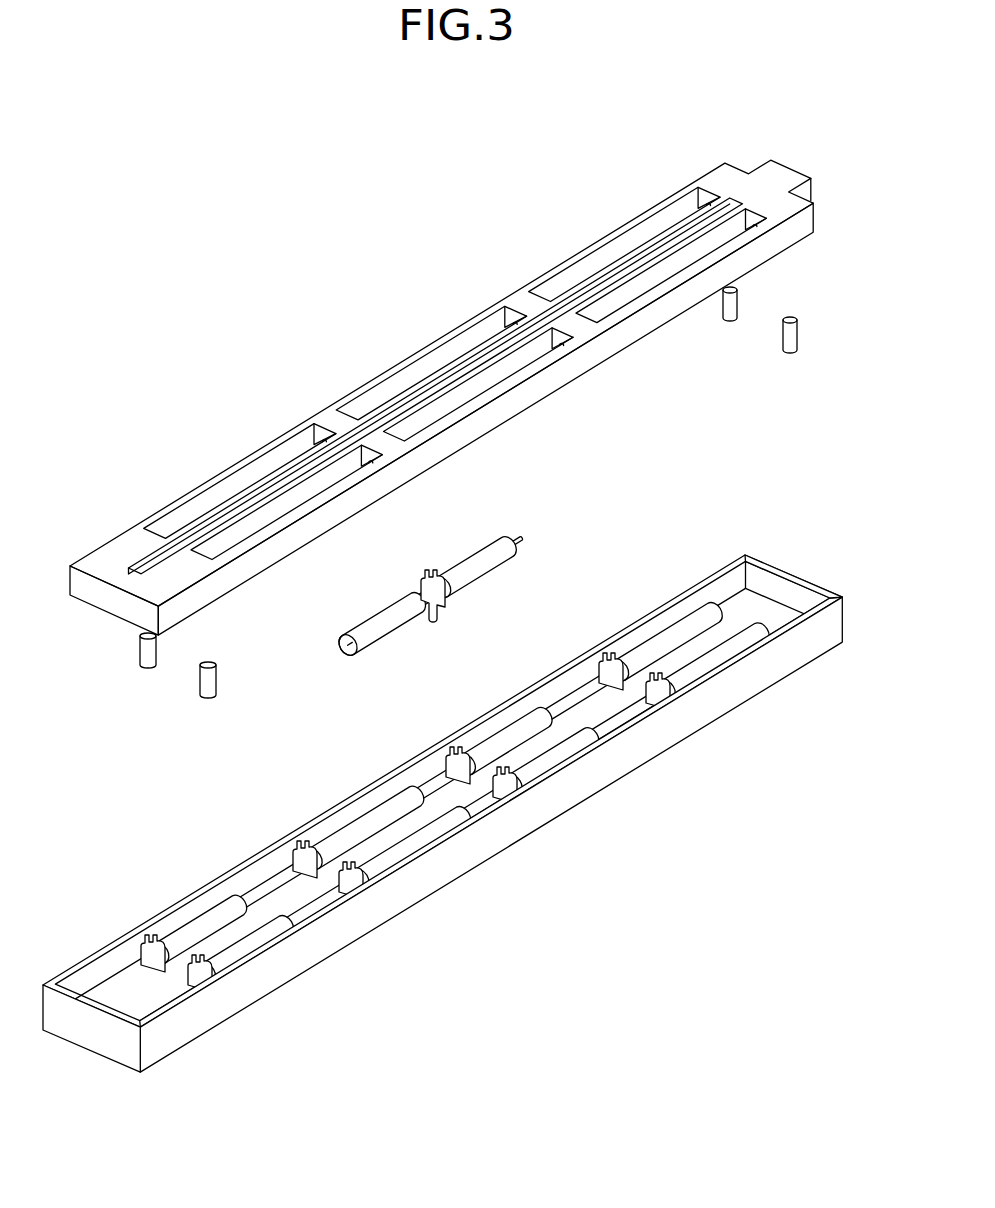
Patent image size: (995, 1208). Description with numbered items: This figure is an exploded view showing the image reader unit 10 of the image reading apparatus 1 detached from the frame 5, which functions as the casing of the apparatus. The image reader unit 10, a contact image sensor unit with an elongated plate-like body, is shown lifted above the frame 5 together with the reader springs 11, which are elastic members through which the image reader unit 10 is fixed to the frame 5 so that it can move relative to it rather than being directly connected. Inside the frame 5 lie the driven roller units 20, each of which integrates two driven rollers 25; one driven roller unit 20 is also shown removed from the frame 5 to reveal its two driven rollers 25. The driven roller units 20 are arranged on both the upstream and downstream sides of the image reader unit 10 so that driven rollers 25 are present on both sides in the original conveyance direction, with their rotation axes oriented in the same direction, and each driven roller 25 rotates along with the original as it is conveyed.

The image reading apparatus 1 is at (465, 173).
The frame 5 is at (442, 776).
The image reader unit 10 is at (720, 177).
The reader spring 11 is at (799, 329).
The driven roller unit 20 is at (362, 630).
The driven roller 25 is at (486, 554).